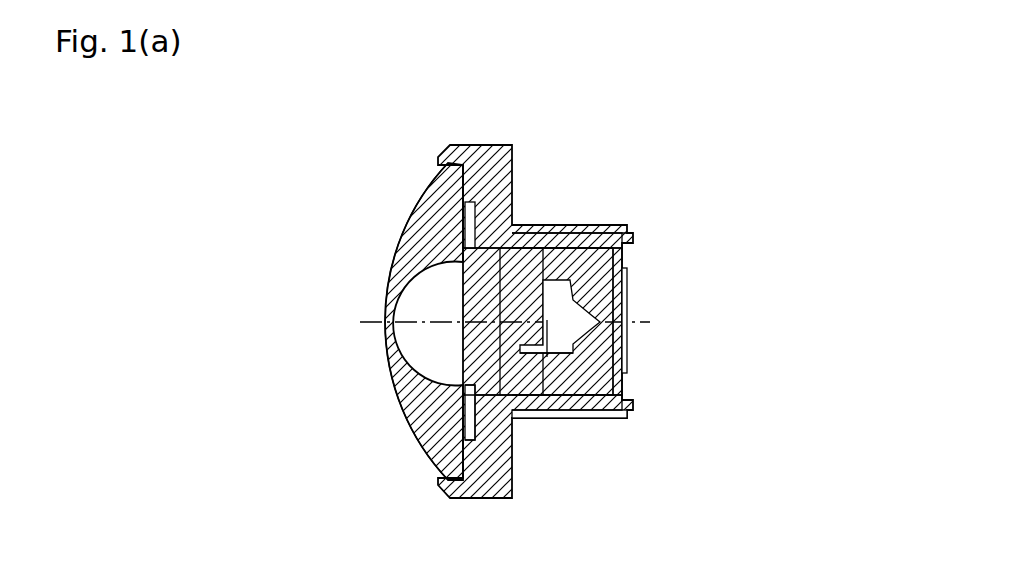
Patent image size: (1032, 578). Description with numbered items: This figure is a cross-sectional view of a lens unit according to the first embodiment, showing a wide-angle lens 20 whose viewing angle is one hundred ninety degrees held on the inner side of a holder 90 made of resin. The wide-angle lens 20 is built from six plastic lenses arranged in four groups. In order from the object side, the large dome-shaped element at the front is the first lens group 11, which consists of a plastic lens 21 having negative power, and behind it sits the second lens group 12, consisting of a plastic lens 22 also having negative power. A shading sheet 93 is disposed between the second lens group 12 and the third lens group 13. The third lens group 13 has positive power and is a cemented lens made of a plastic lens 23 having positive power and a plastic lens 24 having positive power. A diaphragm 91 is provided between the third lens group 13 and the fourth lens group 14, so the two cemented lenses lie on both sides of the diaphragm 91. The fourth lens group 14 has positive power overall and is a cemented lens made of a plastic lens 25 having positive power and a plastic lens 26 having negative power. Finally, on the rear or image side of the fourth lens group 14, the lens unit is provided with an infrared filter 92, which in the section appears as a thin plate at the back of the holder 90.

The first lens group 11 is at (387, 288).
The plastic lens 21 is at (423, 213).
The second lens group 12 is at (485, 246).
The plastic lens 22 is at (490, 270).
The third lens group 13 is at (556, 246).
The plastic lens 23 is at (523, 270).
The plastic lens 24 is at (533, 300).
The fourth lens group 14 is at (613, 253).
The plastic lens 25 is at (583, 267).
The plastic lens 26 is at (633, 221).
The wide-angle lens 20 is at (384, 383).
The holder 90 is at (491, 480).
The diaphragm 91 is at (547, 390).
The infrared filter 92 is at (627, 345).
The shading sheet 93 is at (495, 402).